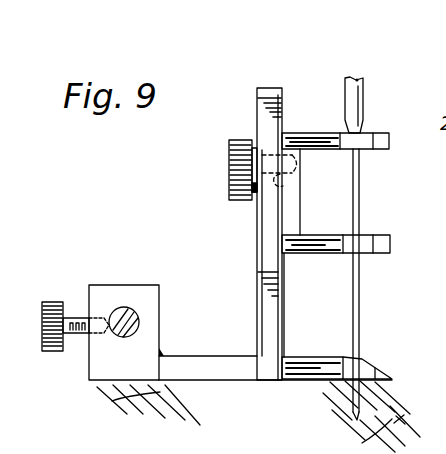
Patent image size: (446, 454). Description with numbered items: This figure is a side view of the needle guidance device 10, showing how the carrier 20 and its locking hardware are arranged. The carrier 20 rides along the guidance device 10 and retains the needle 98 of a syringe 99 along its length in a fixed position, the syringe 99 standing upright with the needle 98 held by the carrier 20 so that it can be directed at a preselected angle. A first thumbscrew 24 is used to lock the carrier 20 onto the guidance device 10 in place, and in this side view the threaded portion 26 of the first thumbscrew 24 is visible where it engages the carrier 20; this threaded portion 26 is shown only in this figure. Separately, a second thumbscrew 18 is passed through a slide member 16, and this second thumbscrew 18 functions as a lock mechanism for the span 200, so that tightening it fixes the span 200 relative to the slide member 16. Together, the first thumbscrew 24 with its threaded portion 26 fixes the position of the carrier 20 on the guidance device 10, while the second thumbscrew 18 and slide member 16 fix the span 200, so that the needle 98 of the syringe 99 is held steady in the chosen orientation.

The guidance device 10 is at (273, 88).
The carrier 20 is at (308, 133).
The syringe 99 is at (358, 104).
The needle 98 is at (362, 323).
The first thumbscrew 24 is at (228, 184).
The threaded portion 26 is at (273, 177).
The slide member 16 is at (148, 288).
The span 200 is at (139, 320).
The second thumbscrew 18 is at (61, 303).